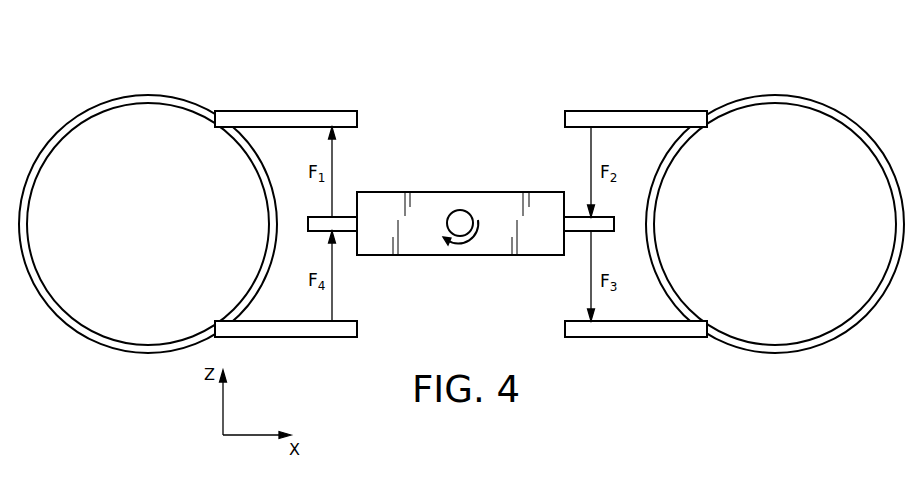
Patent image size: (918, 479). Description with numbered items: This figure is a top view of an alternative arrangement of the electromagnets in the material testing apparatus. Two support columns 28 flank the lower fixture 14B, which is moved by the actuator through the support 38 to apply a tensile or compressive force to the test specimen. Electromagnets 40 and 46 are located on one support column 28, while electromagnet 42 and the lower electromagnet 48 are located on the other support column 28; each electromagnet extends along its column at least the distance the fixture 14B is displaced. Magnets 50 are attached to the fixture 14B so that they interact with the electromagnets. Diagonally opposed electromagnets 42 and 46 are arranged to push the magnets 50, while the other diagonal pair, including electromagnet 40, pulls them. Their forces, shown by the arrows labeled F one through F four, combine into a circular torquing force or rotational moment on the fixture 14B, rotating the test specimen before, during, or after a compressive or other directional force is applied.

The support column 28 is at (190, 98).
The electromagnet 40 is at (279, 111).
The electromagnet 42 is at (643, 111).
The electromagnet 46 is at (282, 337).
The lower right suspension arm 48 is at (643, 337).
The magnets 50 is at (322, 231).
The support 38 is at (462, 209).
The lower fixture 14B is at (432, 256).